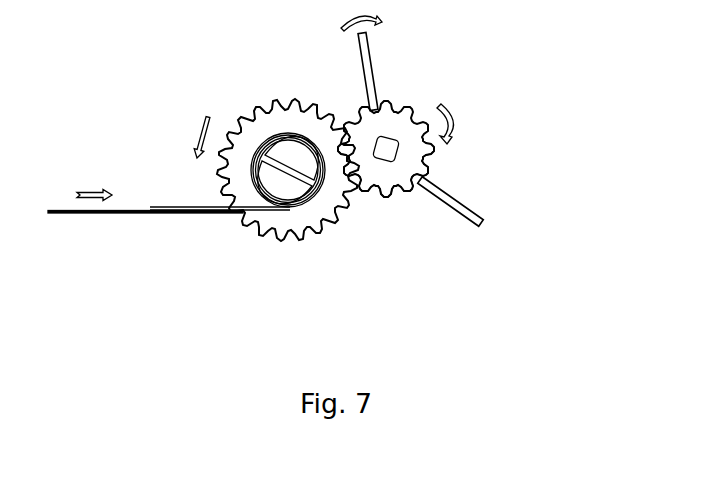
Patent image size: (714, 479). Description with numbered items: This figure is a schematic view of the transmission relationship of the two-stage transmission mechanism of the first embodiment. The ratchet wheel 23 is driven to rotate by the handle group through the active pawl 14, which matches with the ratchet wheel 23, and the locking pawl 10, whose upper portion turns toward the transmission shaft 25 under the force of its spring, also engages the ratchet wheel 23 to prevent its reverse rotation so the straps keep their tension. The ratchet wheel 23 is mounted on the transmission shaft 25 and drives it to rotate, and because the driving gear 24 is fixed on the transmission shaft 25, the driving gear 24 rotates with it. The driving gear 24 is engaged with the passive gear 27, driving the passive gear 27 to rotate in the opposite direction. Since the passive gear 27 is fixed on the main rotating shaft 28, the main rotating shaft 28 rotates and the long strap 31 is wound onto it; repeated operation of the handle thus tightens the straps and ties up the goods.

The locking pawl 10 is at (472, 218).
The active pawl 14 is at (362, 63).
The ratchet wheel 23 is at (408, 113).
The driving gear 24 is at (377, 190).
The transmission shaft 25 is at (388, 153).
The passive gear 27 is at (273, 233).
The main rotating shaft 28 is at (288, 152).
The long strap 31 is at (110, 213).